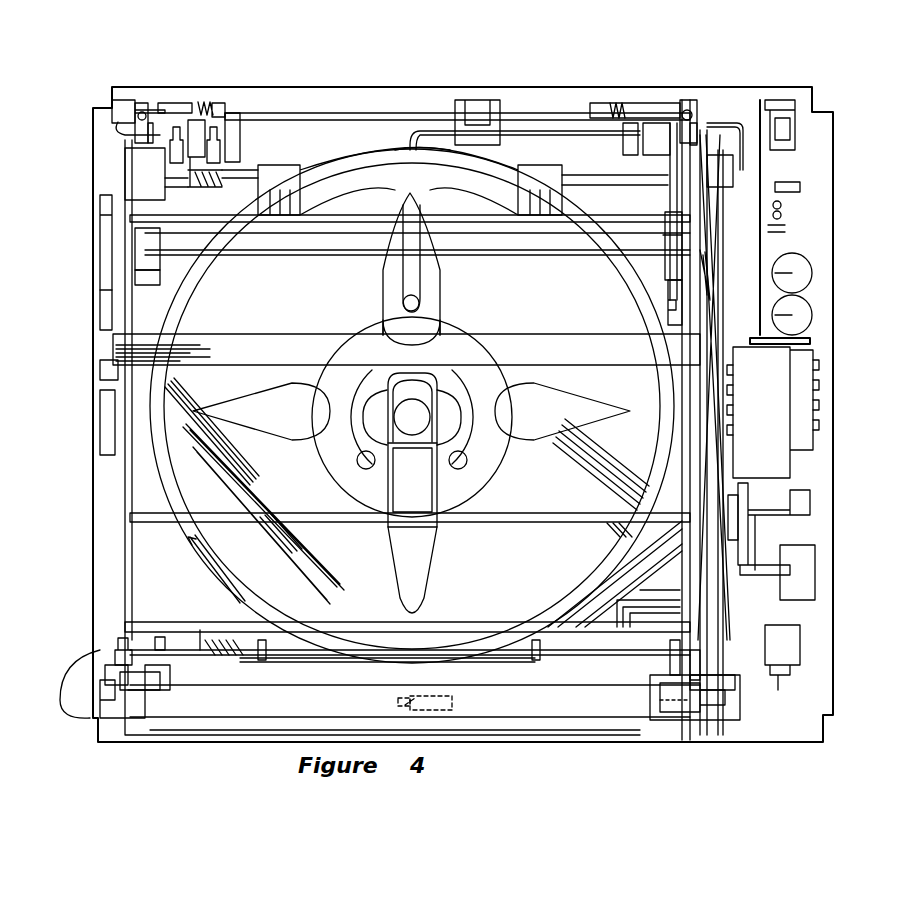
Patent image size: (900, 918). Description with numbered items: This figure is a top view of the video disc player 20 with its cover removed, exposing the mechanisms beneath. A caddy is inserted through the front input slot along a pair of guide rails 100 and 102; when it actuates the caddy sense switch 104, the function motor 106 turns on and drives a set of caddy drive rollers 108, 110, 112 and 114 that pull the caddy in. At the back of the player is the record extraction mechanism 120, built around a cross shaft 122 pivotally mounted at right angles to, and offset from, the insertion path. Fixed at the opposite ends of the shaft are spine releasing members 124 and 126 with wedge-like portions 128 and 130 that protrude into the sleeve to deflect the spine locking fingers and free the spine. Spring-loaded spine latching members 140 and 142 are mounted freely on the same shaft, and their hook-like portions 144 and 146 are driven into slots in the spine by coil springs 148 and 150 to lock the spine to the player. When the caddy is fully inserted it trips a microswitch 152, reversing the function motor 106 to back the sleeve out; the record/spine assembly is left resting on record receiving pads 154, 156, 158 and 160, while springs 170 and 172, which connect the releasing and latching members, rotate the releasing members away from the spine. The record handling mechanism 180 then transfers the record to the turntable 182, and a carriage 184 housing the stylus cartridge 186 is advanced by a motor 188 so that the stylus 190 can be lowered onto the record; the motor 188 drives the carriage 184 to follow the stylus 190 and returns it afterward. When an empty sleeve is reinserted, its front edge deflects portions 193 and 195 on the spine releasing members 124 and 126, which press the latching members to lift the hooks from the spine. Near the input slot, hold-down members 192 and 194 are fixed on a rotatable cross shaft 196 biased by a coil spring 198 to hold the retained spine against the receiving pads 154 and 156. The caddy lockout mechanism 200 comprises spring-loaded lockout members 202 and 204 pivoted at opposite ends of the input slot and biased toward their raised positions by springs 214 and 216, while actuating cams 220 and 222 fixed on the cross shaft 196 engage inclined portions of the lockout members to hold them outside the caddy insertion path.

The video disc player 20 is at (880, 369).
The guide rail 100 is at (135, 585).
The guide rail 102 is at (690, 598).
The caddy sense switch 104 is at (135, 300).
The function motor 106 is at (140, 172).
The caddy drive roller 108 is at (145, 262).
The caddy drive roller 110 is at (148, 285).
The caddy drive roller 112 is at (667, 272).
The caddy drive roller 114 is at (668, 288).
The record extraction mechanism 120 is at (272, 95).
The cross shaft 122 is at (345, 108).
The spine releasing member 124 is at (142, 103).
The spine releasing member 126 is at (687, 100).
The wedge-like portion 128 is at (122, 133).
The wedge-like portion 130 is at (630, 123).
The spine latching member 140 is at (200, 102).
The spine latching member 142 is at (645, 103).
The hook-like portion 144 is at (200, 145).
The hook-like portion 146 is at (645, 150).
The coil spring 148 is at (210, 102).
The coil spring 150 is at (612, 103).
The microswitch 152 is at (153, 130).
The record receiving pad 154 is at (238, 622).
The record receiving pad 156 is at (585, 575).
The record receiving pad 158 is at (285, 165).
The record receiving pad 160 is at (532, 175).
The spring 170 is at (165, 103).
The spring 172 is at (672, 100).
The record handling mechanism 180 is at (420, 306).
The turntable 182 is at (178, 445).
The carriage 184 is at (570, 710).
The stylus cartridge 186 is at (452, 700).
The motor 188 is at (805, 582).
The stylus 190 is at (402, 698).
The hold-down member 192 is at (268, 662).
The portion 193 is at (112, 110).
The hold-down member 194 is at (504, 640).
The portion 195 is at (700, 130).
The cross shaft 196 is at (580, 660).
The coil spring 198 is at (205, 640).
The caddy lockout mechanism 200 is at (162, 712).
The lockout member 202 is at (102, 706).
The lockout member 204 is at (655, 700).
The spring 214 is at (120, 672).
The spring 216 is at (722, 688).
The actuating cam 220 is at (112, 648).
The actuating cam 222 is at (700, 660).